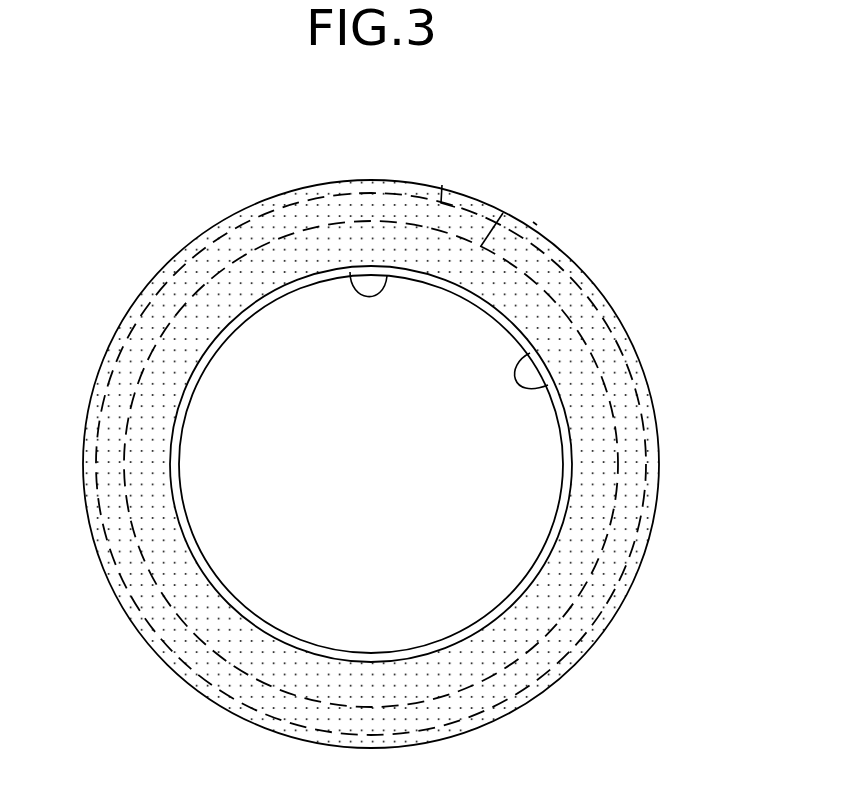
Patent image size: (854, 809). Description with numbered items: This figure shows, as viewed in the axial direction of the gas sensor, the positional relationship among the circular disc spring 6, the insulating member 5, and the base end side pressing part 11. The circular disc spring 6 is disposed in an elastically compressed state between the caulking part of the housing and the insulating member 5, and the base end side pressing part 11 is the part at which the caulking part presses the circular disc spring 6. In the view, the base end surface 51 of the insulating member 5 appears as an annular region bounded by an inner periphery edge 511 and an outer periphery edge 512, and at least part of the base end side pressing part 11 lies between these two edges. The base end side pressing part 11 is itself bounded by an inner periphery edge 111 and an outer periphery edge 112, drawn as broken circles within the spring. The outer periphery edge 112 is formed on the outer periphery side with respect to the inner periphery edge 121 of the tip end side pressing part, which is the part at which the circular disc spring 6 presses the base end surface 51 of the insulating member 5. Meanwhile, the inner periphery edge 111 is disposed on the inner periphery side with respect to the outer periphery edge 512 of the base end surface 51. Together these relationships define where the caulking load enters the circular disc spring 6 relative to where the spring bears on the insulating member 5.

The insulating member 5 is at (260, 625).
The base end surface 51 is at (207, 578).
The inner periphery edge 511 is at (350, 268).
The outer periphery edge 512 is at (442, 185).
The circular disc spring 6 is at (148, 479).
The base end side pressing part 11 is at (557, 278).
The inner periphery edge 111 is at (503, 212).
The outer periphery edge 112 is at (537, 225).
The inner periphery edge 121 is at (533, 390).